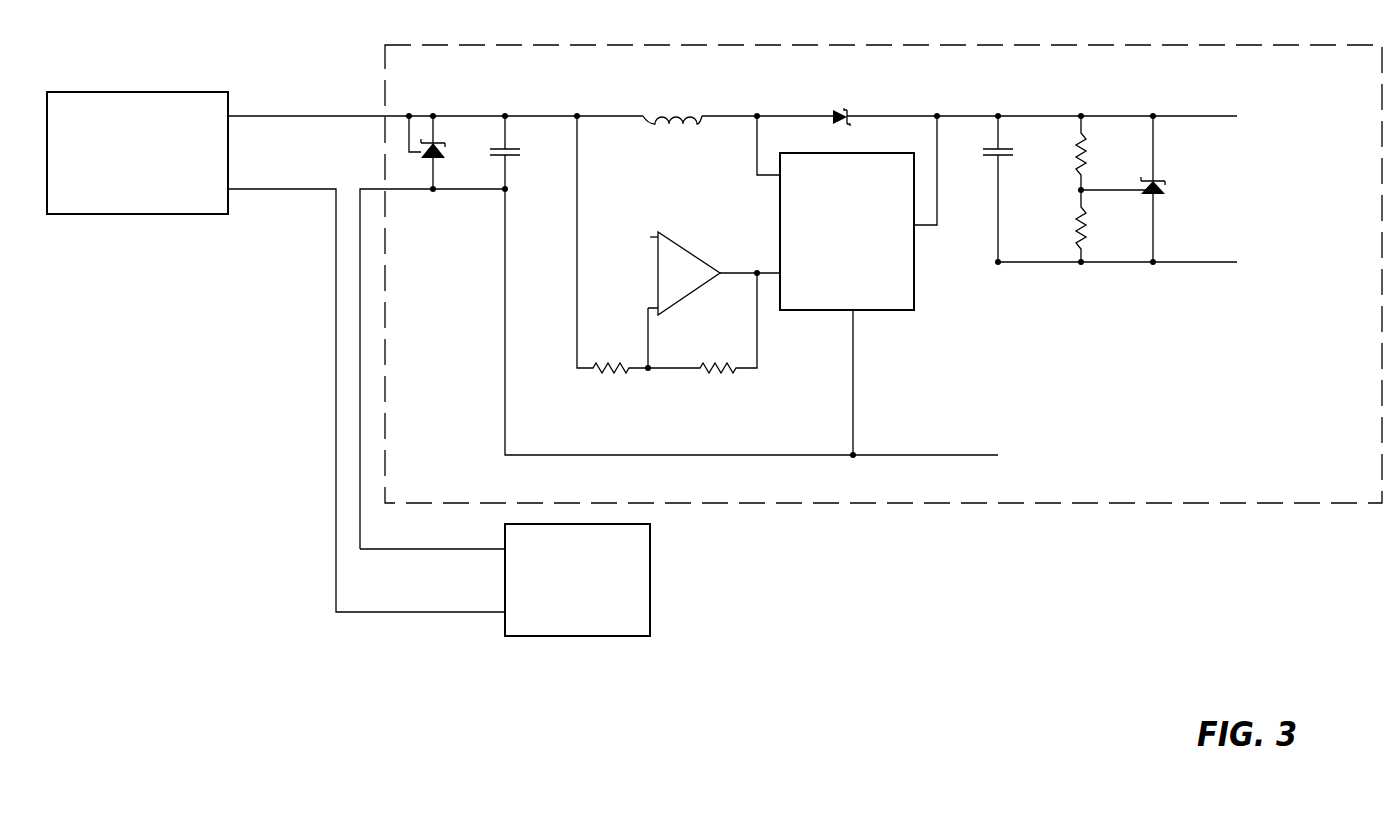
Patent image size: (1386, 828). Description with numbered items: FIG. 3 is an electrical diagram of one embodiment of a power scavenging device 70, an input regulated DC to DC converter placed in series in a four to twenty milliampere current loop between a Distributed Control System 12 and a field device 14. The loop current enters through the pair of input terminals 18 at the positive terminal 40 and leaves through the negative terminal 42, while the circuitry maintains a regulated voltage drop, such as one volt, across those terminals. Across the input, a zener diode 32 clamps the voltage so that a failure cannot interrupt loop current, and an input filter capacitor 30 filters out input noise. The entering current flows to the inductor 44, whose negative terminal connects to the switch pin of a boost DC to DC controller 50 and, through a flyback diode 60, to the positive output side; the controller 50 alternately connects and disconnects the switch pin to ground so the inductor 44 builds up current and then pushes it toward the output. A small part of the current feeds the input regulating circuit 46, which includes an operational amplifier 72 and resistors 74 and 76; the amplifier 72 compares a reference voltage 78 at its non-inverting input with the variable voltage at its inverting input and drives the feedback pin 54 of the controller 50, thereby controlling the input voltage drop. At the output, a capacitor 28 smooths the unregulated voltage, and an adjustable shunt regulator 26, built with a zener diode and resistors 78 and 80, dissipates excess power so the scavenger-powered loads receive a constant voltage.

The Distributed Control System 12 is at (107, 92).
The field device 14 is at (647, 600).
The input terminals 18 is at (435, 322).
The positive terminal 40 is at (317, 112).
The negative terminal 42 is at (316, 192).
The power scavenging device 70 is at (1093, 43).
The zener diode 32 is at (441, 140).
The input filter capacitor 30 is at (508, 148).
The inductor 44 is at (685, 112).
The flyback diode 60 is at (848, 107).
The input regulating circuit 46 is at (692, 235).
The operational amplifier 72 is at (680, 298).
The reference voltage 78 is at (640, 229).
The resistor 74 is at (604, 372).
The resistor 76 is at (712, 372).
The boost DC to DC controller 50 is at (847, 285).
The feedback pin 54 is at (790, 275).
The capacitor 28 is at (998, 148).
The resistor 80 is at (1068, 150).
The adjustable shunt regulator 26 is at (1128, 140).